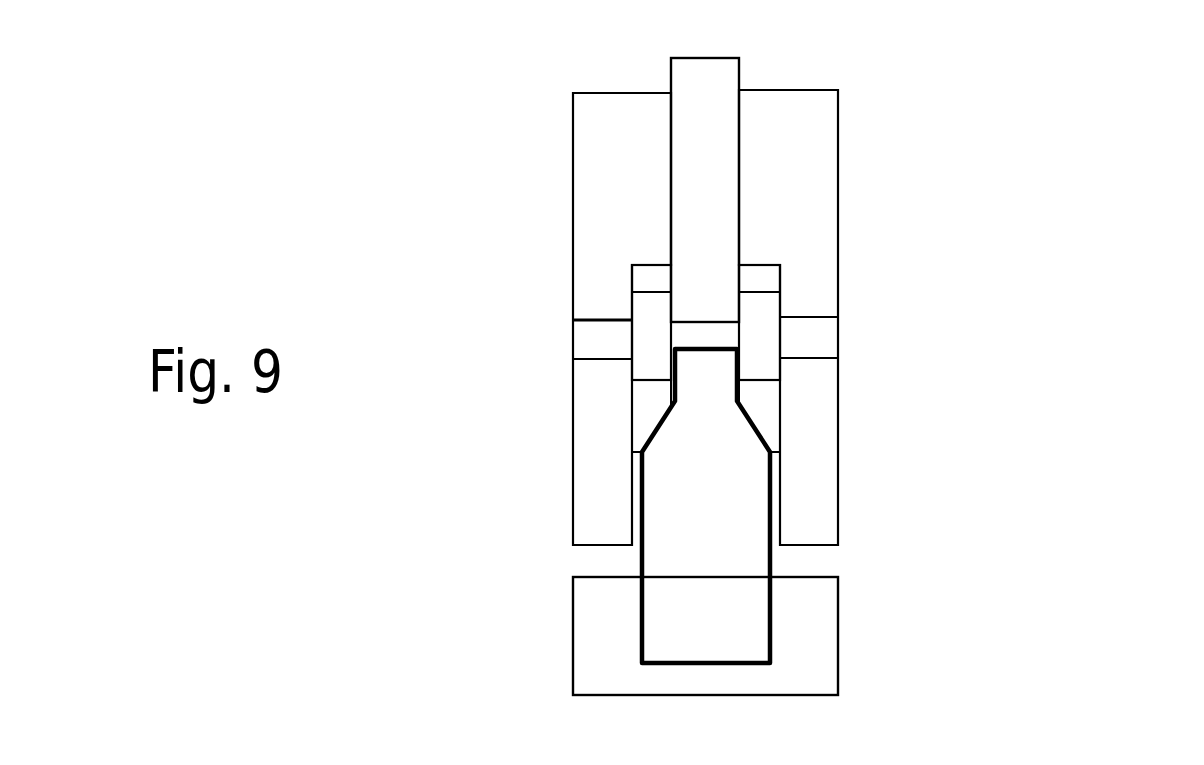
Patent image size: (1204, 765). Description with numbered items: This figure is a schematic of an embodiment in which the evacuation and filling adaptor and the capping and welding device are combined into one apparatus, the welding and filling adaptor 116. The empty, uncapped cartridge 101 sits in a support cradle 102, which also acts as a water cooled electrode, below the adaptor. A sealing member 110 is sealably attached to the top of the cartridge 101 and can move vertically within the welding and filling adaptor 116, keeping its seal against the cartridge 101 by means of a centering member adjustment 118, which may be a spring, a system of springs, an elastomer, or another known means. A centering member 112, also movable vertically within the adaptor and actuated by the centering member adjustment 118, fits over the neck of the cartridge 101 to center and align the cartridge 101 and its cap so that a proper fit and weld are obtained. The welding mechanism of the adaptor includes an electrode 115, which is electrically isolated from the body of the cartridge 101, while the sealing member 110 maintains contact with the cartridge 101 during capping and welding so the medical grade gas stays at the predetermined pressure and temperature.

The cartridge 101 is at (706, 506).
The support cradle/water cooled electrode 102 is at (846, 637).
The sealing member 110 is at (660, 403).
The centering member 112 is at (655, 332).
The electrode 115 is at (717, 80).
The welding and filling adaptor 116 is at (838, 279).
The centering member adjustment 118 is at (762, 275).